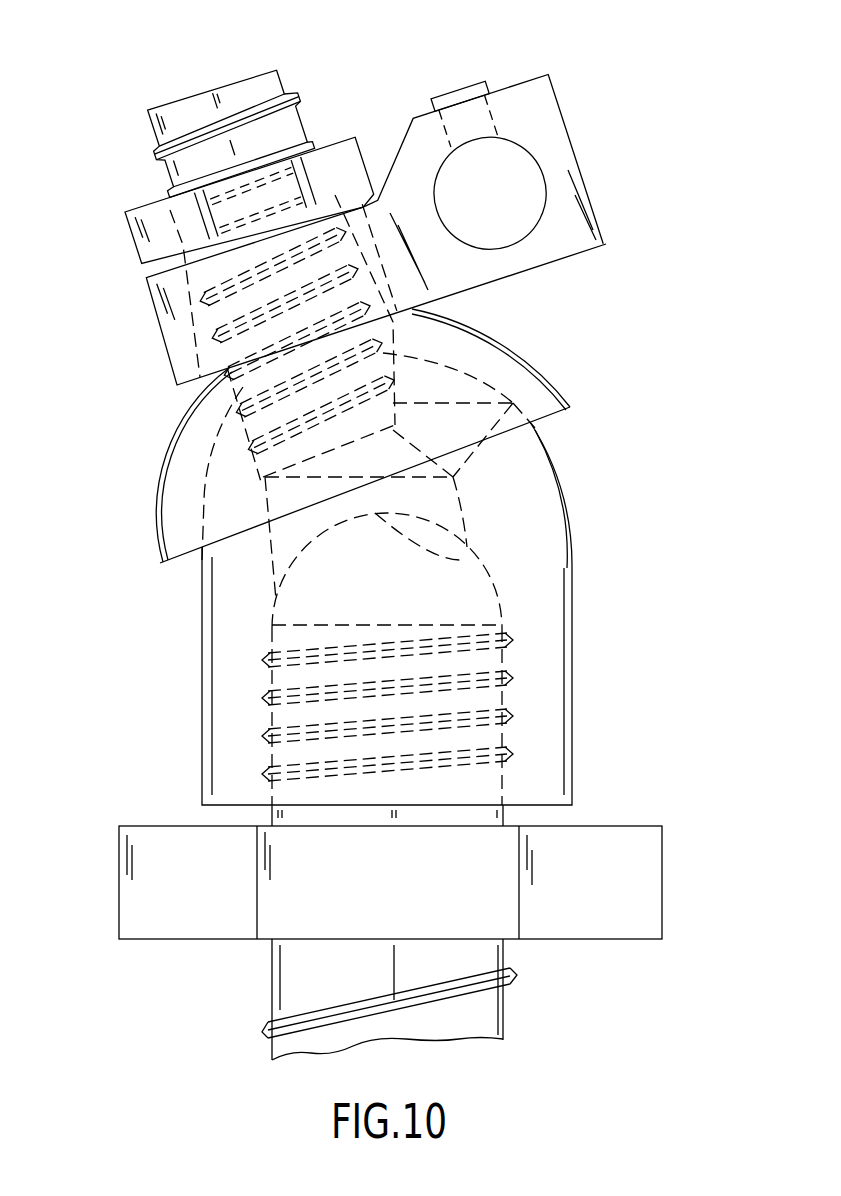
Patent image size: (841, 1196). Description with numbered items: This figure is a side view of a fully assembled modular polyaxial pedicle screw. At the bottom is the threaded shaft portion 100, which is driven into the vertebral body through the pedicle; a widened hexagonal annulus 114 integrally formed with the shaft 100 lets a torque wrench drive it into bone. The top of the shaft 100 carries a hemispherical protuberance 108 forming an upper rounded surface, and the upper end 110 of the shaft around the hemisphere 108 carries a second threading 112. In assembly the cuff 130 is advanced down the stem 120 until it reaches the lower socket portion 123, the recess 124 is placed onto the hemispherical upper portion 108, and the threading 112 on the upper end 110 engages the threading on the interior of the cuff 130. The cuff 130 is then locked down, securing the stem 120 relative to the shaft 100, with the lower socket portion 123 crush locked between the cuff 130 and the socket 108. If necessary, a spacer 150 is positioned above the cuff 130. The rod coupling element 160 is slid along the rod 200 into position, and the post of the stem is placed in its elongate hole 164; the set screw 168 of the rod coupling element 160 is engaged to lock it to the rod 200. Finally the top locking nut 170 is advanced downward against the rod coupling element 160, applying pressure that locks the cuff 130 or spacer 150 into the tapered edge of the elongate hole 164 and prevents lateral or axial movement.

The threaded shaft portion 100 is at (622, 966).
The hemispherical protuberance 108 is at (365, 599).
The upper end of the shaft 110 is at (493, 693).
The second threading 112 is at (493, 753).
The widened hexagonal annulus 114 is at (144, 845).
The stem 120 is at (205, 107).
The lower socket portion 123 is at (262, 543).
The recess 124 is at (490, 560).
The cuff 130 is at (537, 523).
The spacer 150 is at (185, 458).
The rod coupling element 160 is at (547, 110).
The elongate hole 164 is at (150, 285).
The set screw 168 is at (458, 88).
The top locking nut 170 is at (343, 160).
The rod 200 is at (468, 209).